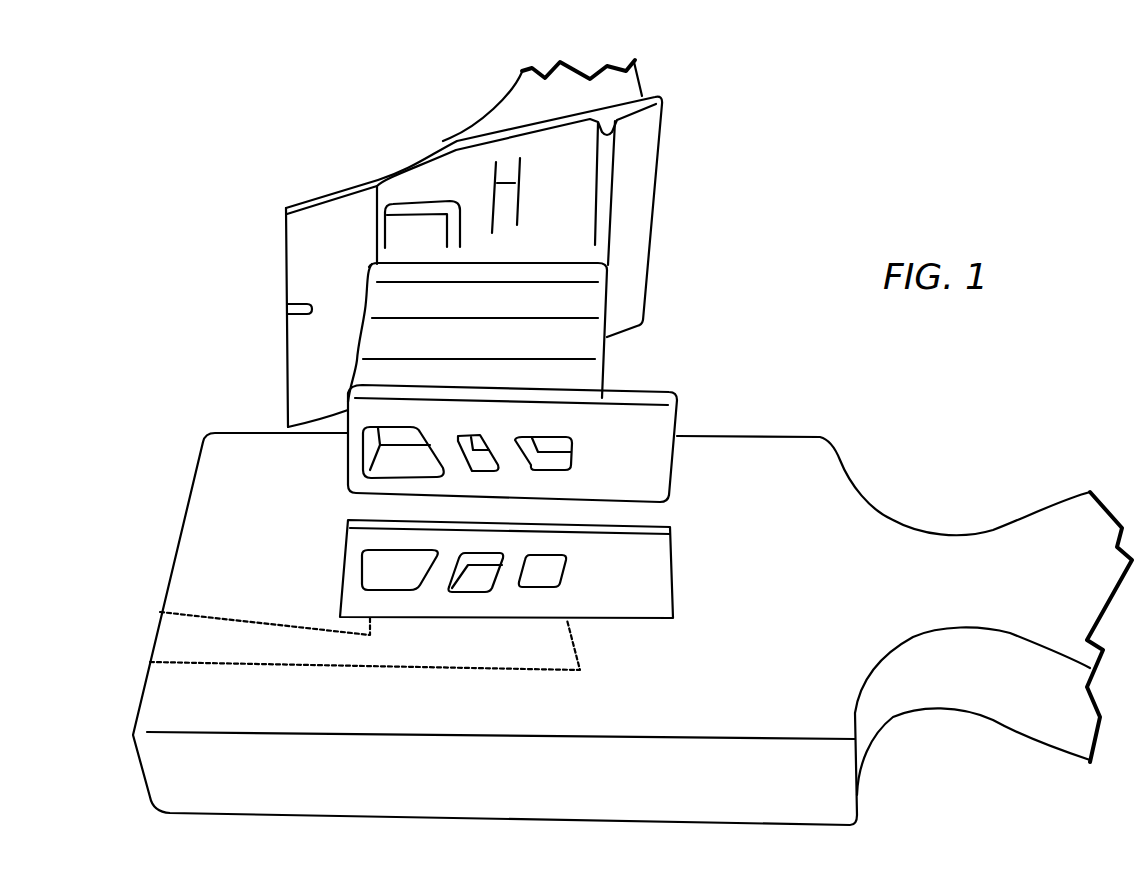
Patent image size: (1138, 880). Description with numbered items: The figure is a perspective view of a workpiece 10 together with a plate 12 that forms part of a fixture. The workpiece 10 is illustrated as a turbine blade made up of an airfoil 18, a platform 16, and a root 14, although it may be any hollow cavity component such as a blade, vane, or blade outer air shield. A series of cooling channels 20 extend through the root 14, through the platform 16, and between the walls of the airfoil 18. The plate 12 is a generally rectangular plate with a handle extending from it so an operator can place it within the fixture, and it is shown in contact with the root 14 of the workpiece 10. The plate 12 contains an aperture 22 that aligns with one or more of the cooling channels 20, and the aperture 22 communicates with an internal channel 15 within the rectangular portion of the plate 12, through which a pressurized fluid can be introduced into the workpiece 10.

The workpiece 10 is at (660, 239).
The plate 12 is at (163, 590).
The root 14 is at (603, 363).
The internal channel 15 is at (203, 652).
The platform 16 is at (282, 283).
The airfoil 18 is at (500, 110).
The cooling channels 20 is at (390, 457).
The aperture 22 is at (482, 586).